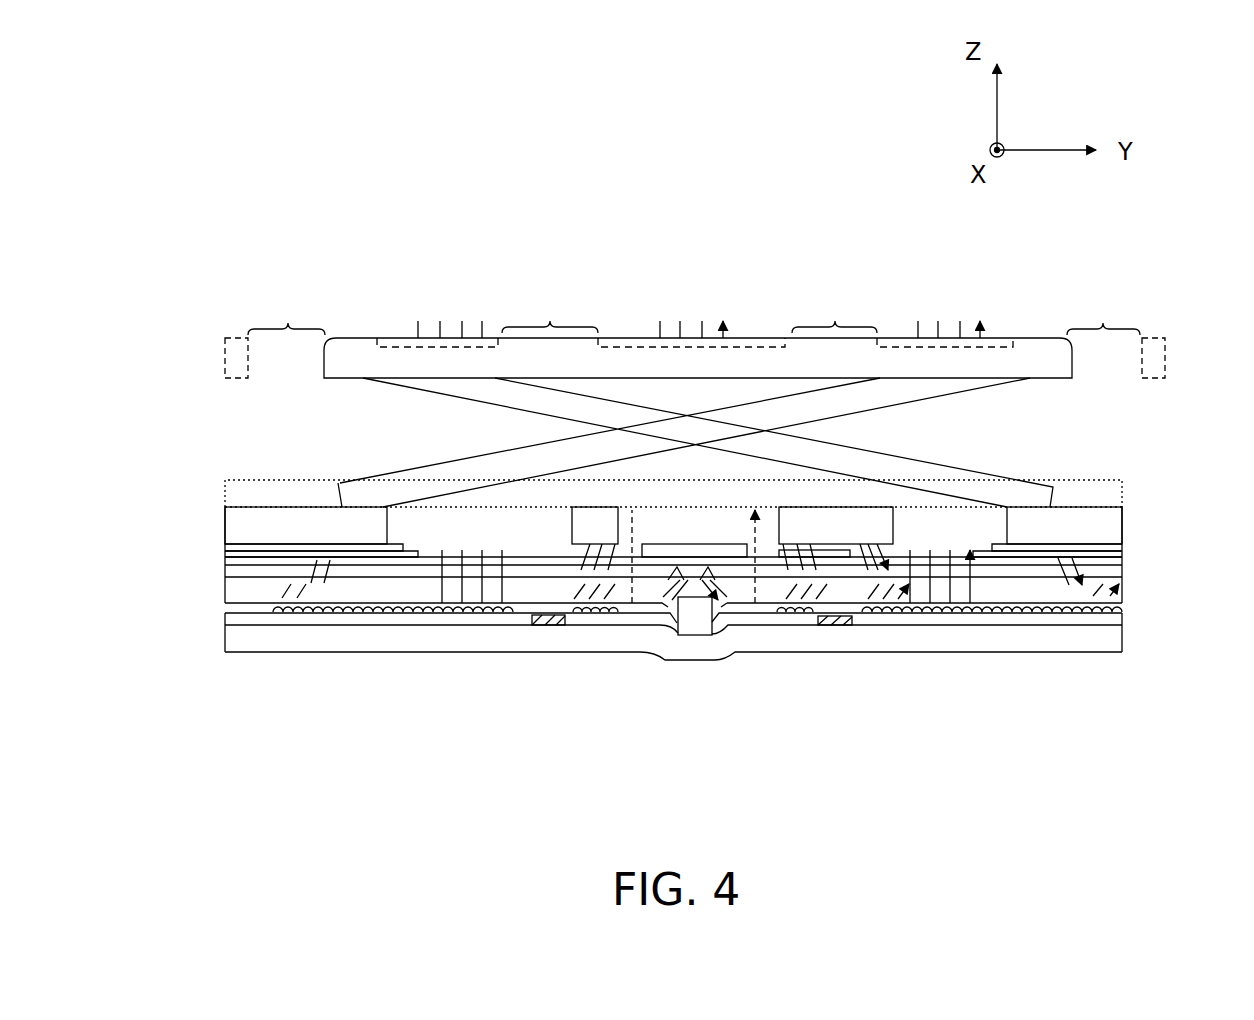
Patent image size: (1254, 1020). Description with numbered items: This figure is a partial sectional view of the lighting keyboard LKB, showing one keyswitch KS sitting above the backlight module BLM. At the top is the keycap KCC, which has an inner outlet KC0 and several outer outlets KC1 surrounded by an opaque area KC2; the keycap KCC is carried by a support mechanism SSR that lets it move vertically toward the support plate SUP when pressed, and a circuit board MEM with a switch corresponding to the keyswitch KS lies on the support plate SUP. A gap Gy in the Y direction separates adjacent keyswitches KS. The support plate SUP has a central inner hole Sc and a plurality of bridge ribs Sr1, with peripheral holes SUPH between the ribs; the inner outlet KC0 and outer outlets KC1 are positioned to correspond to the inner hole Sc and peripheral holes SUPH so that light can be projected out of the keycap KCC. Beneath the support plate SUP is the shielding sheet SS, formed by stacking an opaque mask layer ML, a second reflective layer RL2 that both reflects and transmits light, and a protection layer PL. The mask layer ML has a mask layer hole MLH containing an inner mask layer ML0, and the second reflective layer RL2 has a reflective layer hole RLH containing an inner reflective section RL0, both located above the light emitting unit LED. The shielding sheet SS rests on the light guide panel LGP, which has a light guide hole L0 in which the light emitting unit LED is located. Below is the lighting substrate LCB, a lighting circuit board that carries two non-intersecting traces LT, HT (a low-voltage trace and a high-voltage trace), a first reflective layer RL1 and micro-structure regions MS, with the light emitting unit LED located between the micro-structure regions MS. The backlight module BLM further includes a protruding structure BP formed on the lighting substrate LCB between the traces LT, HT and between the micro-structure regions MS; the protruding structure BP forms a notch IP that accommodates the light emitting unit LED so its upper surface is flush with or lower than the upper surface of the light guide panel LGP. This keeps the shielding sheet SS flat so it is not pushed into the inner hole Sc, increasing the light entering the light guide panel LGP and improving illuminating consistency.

The lighting keyboard LKB is at (487, 143).
The keyswitch KS is at (693, 252).
The outer outlet KC1 is at (395, 338).
The inner outlet KC0 is at (638, 338).
The opaque area KC2 is at (552, 321).
The keycap KCC is at (235, 316).
The gap Gy is at (694, 314).
The support mechanism SSR is at (495, 392).
The support plate SUP is at (1123, 523).
The circuit board MEM is at (1121, 480).
The peripheral hole SUPH is at (460, 527).
The bridge rib Sr1 is at (850, 517).
The mask layer ML is at (226, 530).
The inner mask layer ML0 is at (695, 543).
The mask layer hole MLH is at (387, 540).
The second reflective layer RL2 is at (226, 551).
The reflective layer hole RLH is at (433, 560).
The inner reflective section RL0 is at (563, 552).
The inner hole Sc is at (733, 530).
The shielding sheet SS is at (1128, 546).
The protection layer PL is at (226, 588).
The micro-structure region MS is at (450, 614).
The light guide panel LGP is at (1123, 590).
The first reflective layer RL1 is at (226, 630).
The backlight module BLM is at (1026, 668).
The lighting substrate LCB is at (362, 655).
The trace LT is at (547, 626).
The trace HT is at (835, 625).
The light emitting unit LED is at (693, 628).
The light guide hole L0 is at (665, 580).
The protruding structure BP is at (684, 652).
The notch IP is at (720, 636).